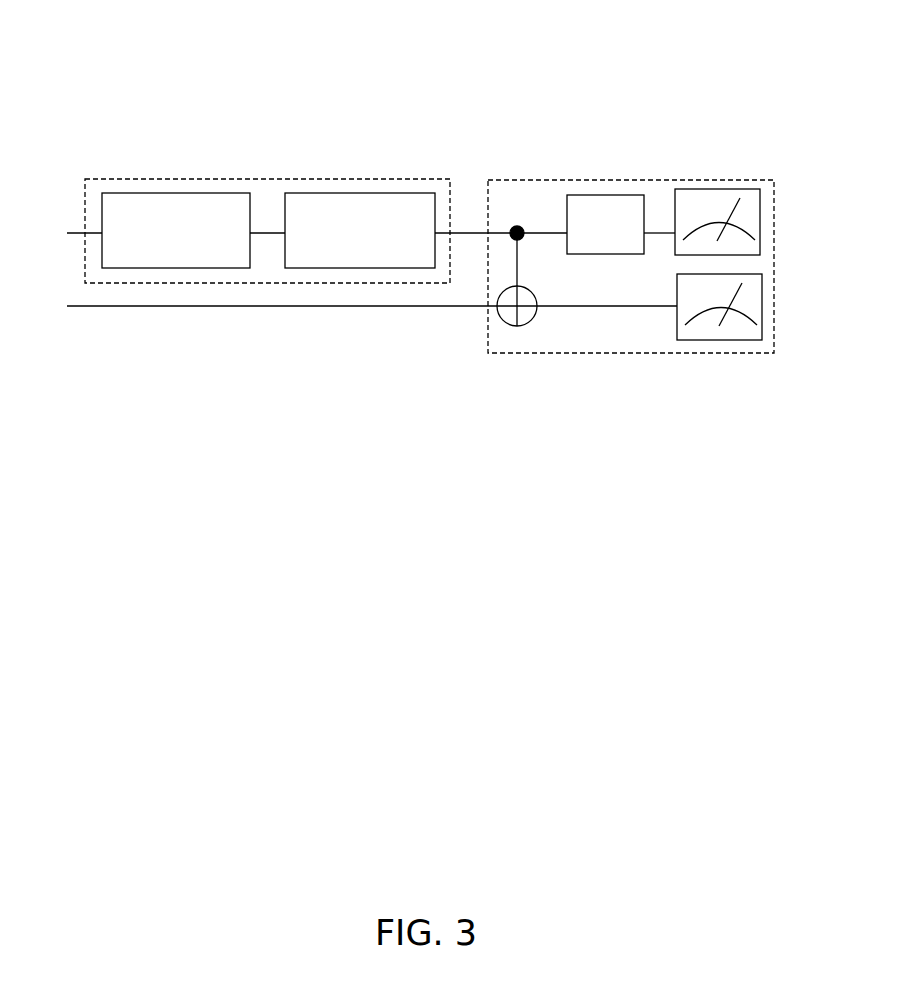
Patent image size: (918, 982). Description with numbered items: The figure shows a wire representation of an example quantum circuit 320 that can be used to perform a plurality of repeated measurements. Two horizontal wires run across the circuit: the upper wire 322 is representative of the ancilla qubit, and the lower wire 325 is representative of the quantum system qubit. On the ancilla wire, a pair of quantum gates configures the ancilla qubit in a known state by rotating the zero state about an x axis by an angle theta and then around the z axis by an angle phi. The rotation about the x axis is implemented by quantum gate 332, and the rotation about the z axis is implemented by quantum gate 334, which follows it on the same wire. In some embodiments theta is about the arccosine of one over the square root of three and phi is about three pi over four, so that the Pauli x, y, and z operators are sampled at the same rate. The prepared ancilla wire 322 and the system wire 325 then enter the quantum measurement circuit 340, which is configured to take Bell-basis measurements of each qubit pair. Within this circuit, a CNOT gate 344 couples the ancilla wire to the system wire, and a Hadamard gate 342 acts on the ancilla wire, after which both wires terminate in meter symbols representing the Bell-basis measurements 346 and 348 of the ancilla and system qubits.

The quantum circuit 320 is at (546, 68).
The wire 322 is at (78, 231).
The wire 325 is at (80, 308).
The quantum gate 332 is at (152, 192).
The quantum gate 334 is at (325, 192).
The quantum measurement circuit 340 is at (625, 180).
The Hadamard gate 342 is at (632, 255).
The CNOT gate 344 is at (537, 315).
The Bell-basis measurement 346 is at (760, 207).
The Bell-basis measurement 348 is at (762, 295).